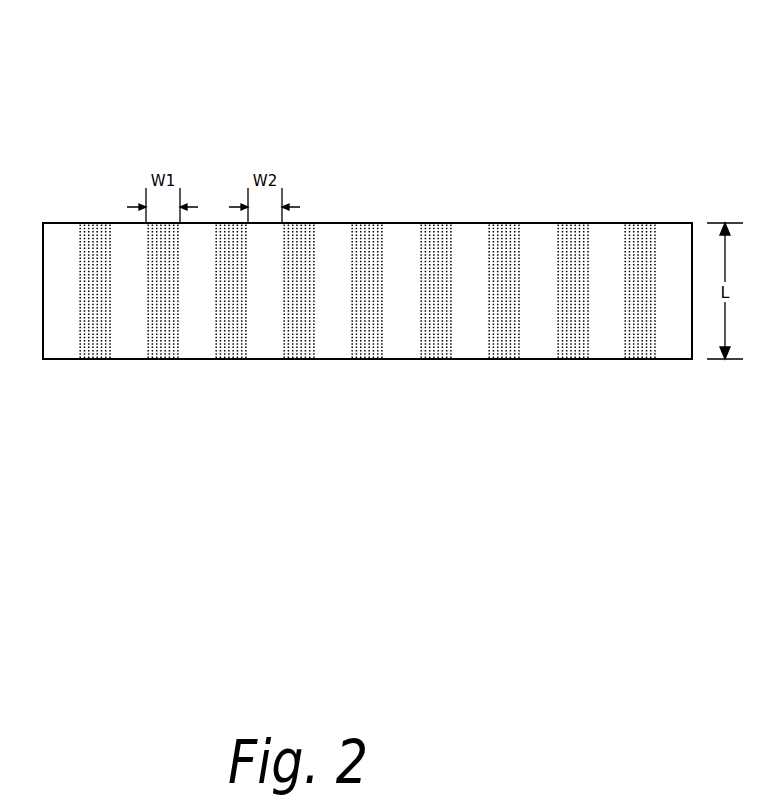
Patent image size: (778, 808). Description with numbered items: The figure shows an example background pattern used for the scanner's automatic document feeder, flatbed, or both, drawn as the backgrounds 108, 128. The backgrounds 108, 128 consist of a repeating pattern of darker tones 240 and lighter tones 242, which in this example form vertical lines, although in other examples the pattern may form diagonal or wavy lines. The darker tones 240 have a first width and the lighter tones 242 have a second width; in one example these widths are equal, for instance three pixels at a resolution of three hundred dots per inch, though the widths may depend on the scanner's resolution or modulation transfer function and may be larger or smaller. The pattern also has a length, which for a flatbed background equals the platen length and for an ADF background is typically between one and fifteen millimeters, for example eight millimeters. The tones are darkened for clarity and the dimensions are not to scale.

The background 108 is at (359, 259).
The background 128 is at (359, 282).
The darker tones 240 is at (232, 410).
The lighter tones 242 is at (198, 223).